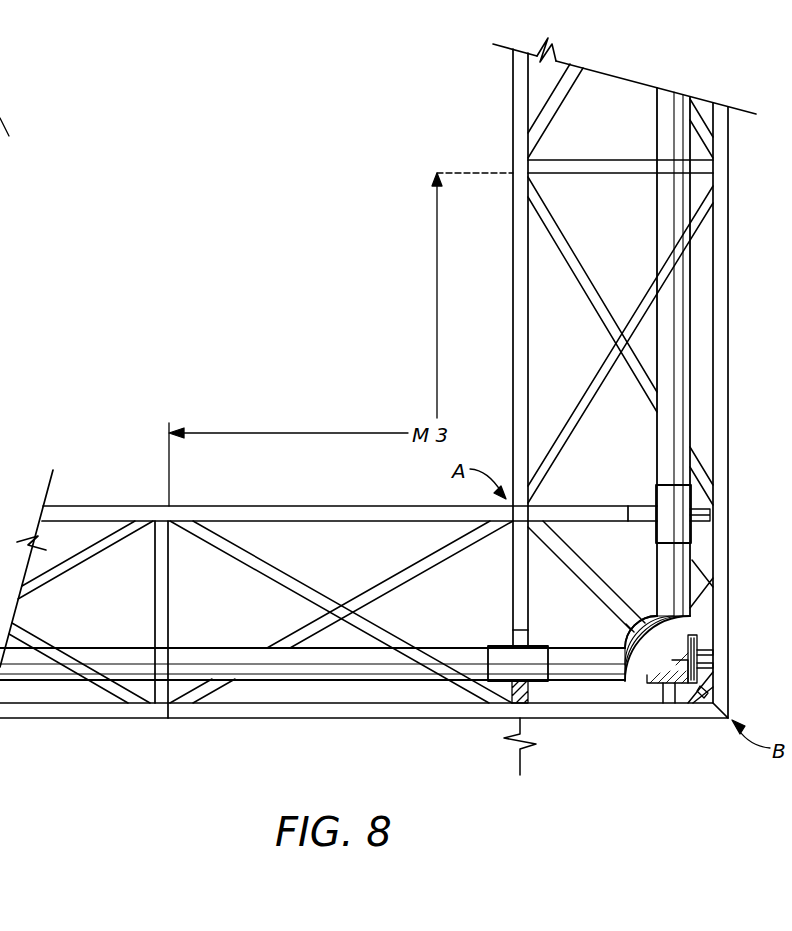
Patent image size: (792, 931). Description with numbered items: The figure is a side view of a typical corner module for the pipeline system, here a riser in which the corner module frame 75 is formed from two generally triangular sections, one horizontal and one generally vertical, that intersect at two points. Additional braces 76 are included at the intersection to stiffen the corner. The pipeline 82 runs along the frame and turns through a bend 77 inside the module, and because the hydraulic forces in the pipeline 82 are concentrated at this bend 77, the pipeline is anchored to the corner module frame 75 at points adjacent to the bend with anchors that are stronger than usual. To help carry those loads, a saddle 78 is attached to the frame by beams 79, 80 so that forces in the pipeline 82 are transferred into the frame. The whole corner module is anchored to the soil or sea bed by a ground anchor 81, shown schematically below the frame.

The corner module frame 75 is at (350, 505).
The additional braces 76 is at (706, 697).
The bend 77 is at (650, 626).
The saddle 78 is at (700, 641).
The beam 79 is at (712, 673).
The beam 80 is at (663, 693).
The ground anchor 81 is at (503, 757).
The pipe 82 is at (655, 492).